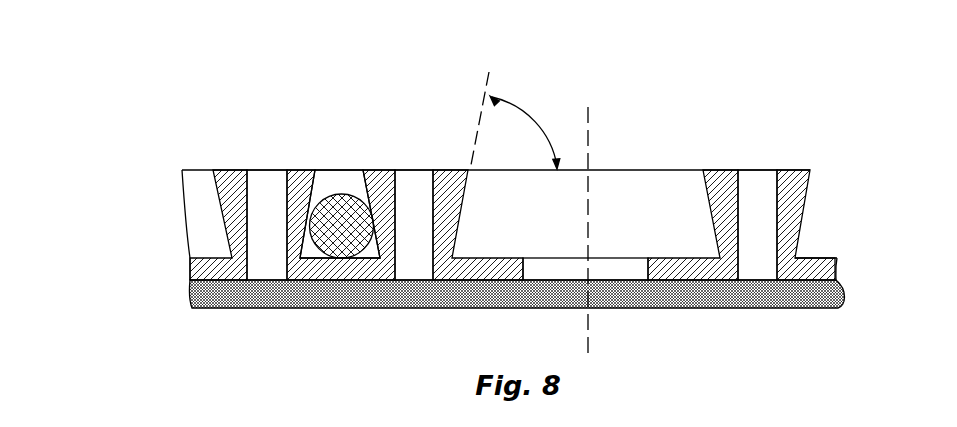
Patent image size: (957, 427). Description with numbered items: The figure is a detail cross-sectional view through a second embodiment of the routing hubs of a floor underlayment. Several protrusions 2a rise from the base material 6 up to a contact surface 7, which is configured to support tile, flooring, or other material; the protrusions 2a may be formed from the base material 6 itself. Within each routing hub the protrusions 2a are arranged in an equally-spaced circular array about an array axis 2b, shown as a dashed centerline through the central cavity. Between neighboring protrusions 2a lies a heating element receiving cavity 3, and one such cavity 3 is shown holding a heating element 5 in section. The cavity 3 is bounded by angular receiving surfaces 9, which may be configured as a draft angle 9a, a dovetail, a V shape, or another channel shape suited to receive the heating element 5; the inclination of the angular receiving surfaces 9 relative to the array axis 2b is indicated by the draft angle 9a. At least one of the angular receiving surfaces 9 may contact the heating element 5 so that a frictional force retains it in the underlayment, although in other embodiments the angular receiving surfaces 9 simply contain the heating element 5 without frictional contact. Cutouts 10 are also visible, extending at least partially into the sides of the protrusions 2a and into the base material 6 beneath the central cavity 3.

The protrusion 2a is at (173, 258).
The array axis 2b is at (592, 190).
The heating element receiving cavity 3 is at (344, 165).
The heating element 5 is at (342, 222).
The base material 6 is at (830, 258).
The contact surface 7 is at (795, 170).
The angular receiving surface 9 is at (837, 295).
The draft angle 9a is at (540, 117).
The cutout 10 is at (257, 167).